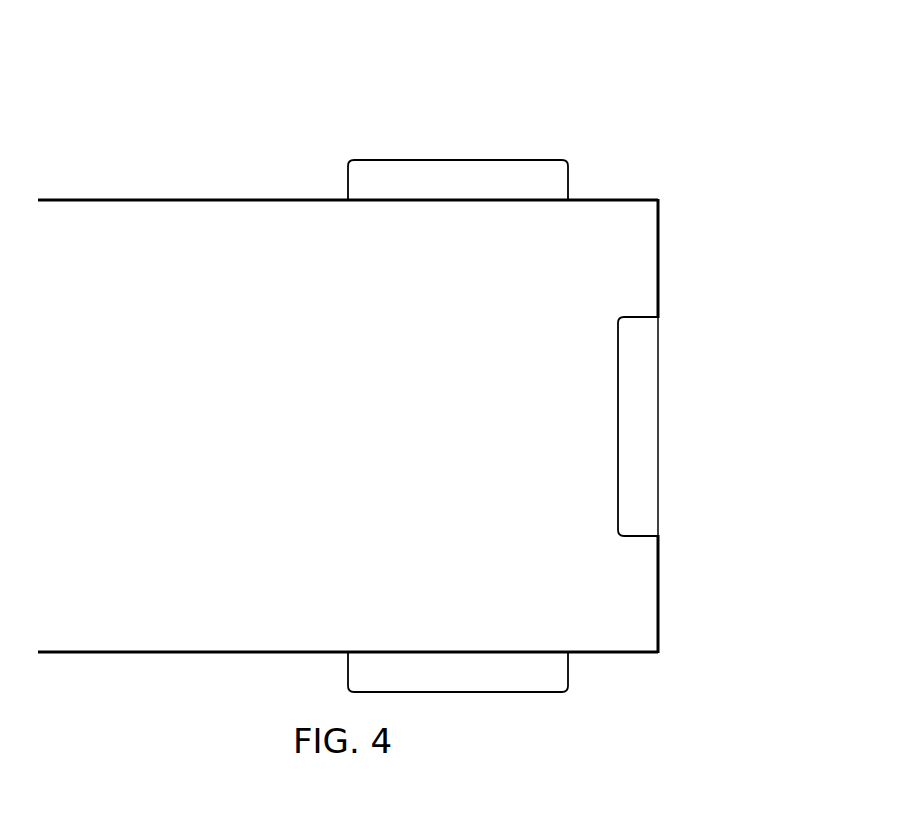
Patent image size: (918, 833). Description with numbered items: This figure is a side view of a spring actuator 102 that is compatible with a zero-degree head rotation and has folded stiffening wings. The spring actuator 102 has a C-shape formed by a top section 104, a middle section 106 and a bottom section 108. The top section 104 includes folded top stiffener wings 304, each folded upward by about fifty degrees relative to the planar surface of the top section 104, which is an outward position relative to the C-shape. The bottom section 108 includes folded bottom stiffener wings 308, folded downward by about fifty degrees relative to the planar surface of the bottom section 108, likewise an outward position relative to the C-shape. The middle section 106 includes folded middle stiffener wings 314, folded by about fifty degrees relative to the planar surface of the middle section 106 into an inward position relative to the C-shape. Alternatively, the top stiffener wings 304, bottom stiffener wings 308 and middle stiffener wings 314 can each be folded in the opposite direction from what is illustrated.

The spring actuator 102 is at (178, 97).
The top section 104 is at (136, 198).
The middle section 106 is at (660, 232).
The bottom section 108 is at (140, 655).
The top stiffener wings 304 is at (522, 170).
The bottom stiffener wings 308 is at (540, 680).
The middle stiffener wings 314 is at (640, 418).